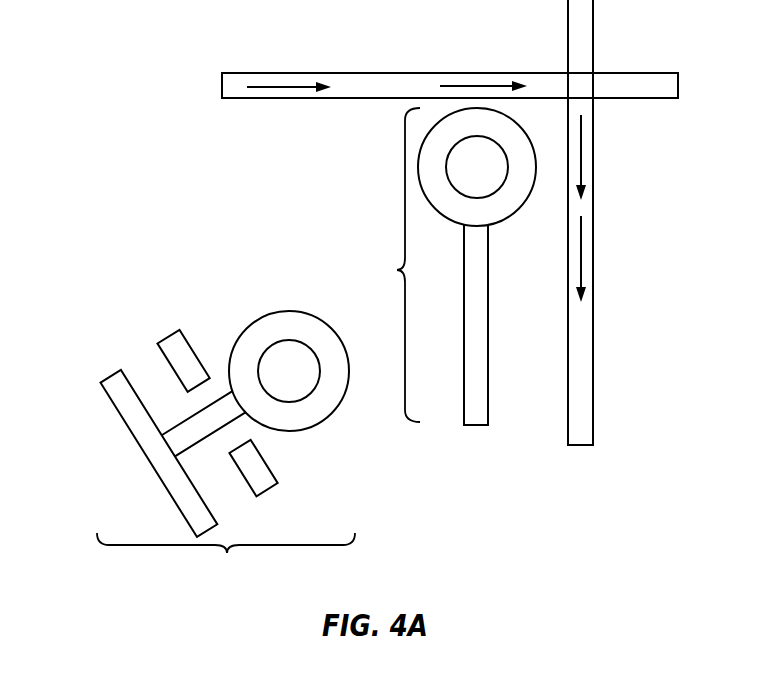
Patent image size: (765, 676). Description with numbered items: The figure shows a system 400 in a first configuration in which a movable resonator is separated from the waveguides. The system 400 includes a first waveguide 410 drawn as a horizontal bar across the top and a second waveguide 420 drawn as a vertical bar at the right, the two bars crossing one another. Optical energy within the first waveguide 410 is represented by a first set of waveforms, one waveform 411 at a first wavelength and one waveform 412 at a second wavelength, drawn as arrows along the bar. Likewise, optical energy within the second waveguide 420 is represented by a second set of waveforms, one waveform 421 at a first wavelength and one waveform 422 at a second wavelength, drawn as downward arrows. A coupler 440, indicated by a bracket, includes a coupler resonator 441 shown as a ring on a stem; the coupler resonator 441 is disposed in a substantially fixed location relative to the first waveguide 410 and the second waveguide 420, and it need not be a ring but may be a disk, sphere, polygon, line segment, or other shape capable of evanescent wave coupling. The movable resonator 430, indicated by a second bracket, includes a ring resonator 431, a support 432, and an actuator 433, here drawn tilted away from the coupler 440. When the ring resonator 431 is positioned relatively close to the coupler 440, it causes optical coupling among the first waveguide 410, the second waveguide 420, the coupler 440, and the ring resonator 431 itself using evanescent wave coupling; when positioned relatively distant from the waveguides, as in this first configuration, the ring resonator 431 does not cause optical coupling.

The system 400 is at (106, 116).
The first waveguide 410 is at (405, 83).
The waveform at a first wavelength 411 is at (285, 88).
The waveform at a second wavelength 412 is at (480, 85).
The second waveguide 420 is at (583, 343).
The waveform at a first wavelength 421 is at (583, 158).
The waveform at a second wavelength 422 is at (583, 262).
The movable resonator 430 is at (226, 422).
The ring resonator 431 is at (290, 318).
The support 432 is at (197, 428).
The actuator 433 is at (170, 343).
The coupler 440 is at (446, 266).
The coupler resonator 441 is at (500, 212).